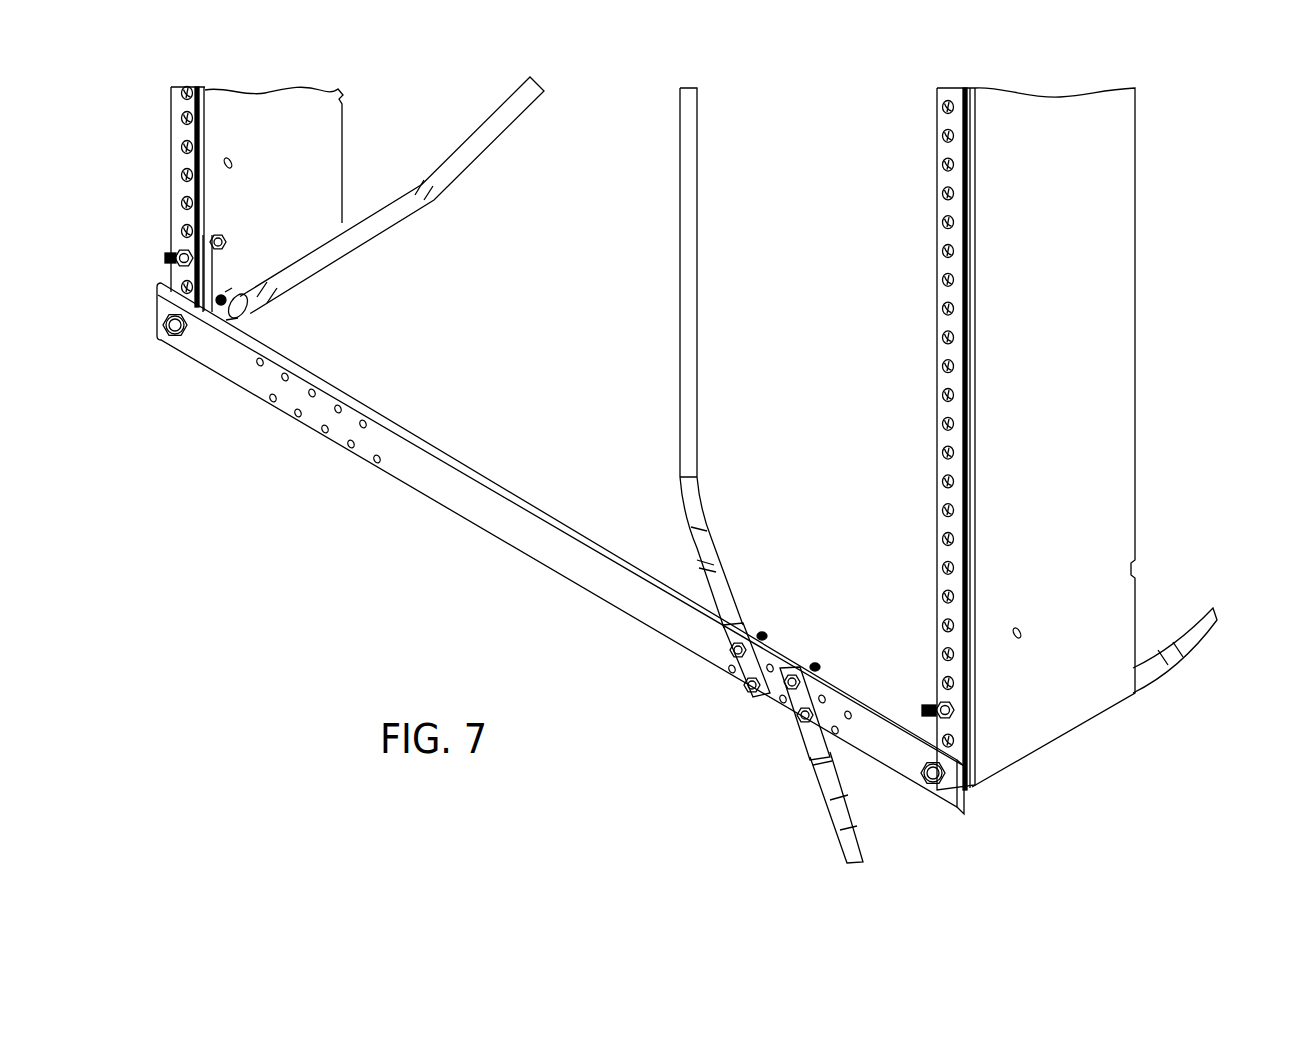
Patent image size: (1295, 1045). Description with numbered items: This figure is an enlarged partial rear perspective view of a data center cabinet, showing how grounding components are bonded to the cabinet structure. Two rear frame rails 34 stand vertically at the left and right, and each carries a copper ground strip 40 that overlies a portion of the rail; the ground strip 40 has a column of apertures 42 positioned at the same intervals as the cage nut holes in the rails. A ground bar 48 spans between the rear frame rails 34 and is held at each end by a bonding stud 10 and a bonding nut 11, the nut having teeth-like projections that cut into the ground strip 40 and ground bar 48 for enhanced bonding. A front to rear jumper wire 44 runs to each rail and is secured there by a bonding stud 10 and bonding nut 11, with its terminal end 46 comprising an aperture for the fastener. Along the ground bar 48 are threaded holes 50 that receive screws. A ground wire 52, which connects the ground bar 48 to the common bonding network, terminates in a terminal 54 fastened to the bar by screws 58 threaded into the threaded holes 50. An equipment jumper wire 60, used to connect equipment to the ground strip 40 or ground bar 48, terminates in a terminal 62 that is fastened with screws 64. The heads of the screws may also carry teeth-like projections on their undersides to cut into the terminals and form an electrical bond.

The bonding stud 10 is at (166, 267).
The bonding nut 11 is at (183, 249).
The rear frame rail 34 is at (280, 120).
The copper ground strip 40 is at (178, 130).
The apertures 42 is at (182, 200).
The front to rear jumper wire 44 is at (368, 237).
The terminal end 46 is at (240, 312).
The ground bar 48 is at (455, 492).
The threaded holes 50 is at (297, 418).
The ground wire 52 is at (847, 852).
The terminal 54 is at (808, 735).
The screw 58 is at (790, 690).
The equipment jumper wire 60 is at (692, 388).
The terminal 62 is at (745, 672).
The screw 64 is at (735, 657).